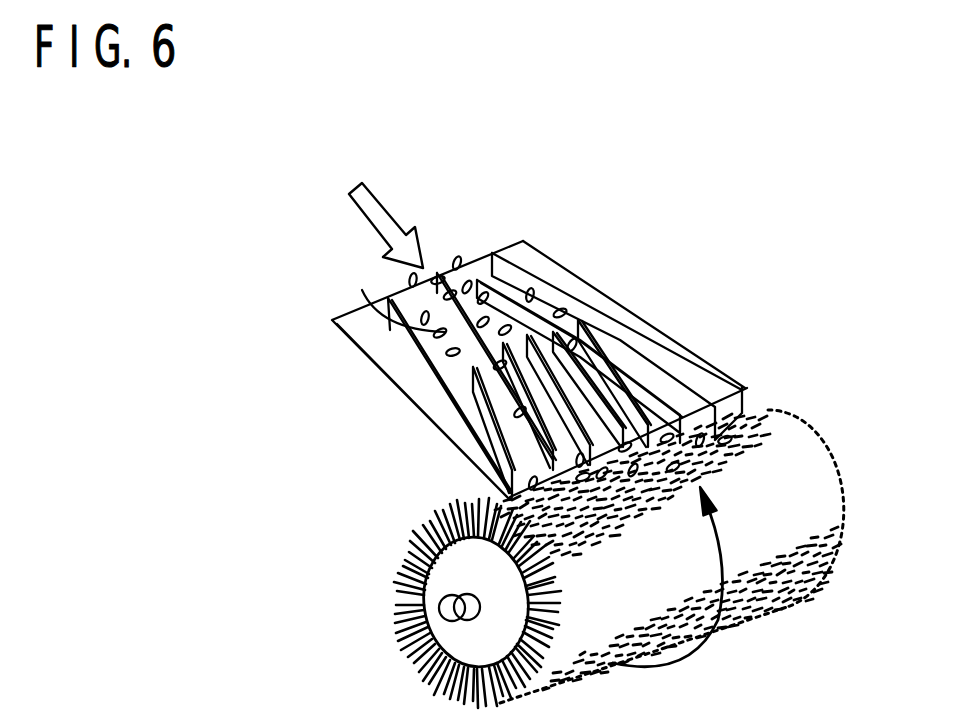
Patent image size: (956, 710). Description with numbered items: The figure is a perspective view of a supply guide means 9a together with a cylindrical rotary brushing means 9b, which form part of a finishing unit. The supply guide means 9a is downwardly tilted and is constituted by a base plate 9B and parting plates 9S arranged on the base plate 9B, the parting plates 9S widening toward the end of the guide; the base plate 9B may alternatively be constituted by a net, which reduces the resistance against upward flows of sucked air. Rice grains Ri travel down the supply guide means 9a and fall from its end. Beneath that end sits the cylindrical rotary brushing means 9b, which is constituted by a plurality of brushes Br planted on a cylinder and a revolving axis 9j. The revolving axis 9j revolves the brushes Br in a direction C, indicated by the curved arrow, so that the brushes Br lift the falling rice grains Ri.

The supply guide means 9a is at (612, 288).
The cylindrical rotary brushing means 9b is at (848, 440).
The base plate 9B is at (382, 343).
The parting plates 9S is at (708, 382).
The revolving axis 9j is at (455, 618).
The rice grains Ri is at (393, 283).
The brushes Br is at (787, 598).
The direction C is at (676, 578).